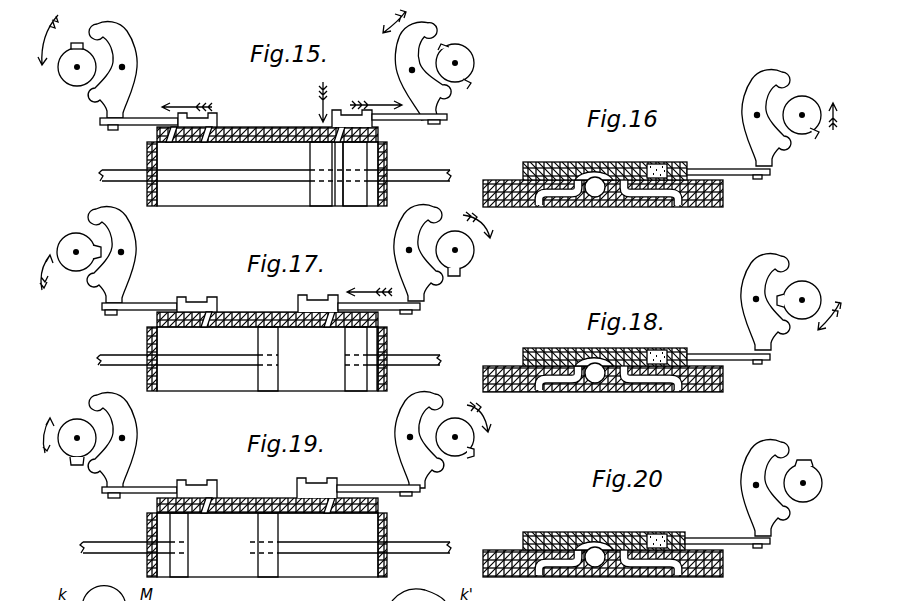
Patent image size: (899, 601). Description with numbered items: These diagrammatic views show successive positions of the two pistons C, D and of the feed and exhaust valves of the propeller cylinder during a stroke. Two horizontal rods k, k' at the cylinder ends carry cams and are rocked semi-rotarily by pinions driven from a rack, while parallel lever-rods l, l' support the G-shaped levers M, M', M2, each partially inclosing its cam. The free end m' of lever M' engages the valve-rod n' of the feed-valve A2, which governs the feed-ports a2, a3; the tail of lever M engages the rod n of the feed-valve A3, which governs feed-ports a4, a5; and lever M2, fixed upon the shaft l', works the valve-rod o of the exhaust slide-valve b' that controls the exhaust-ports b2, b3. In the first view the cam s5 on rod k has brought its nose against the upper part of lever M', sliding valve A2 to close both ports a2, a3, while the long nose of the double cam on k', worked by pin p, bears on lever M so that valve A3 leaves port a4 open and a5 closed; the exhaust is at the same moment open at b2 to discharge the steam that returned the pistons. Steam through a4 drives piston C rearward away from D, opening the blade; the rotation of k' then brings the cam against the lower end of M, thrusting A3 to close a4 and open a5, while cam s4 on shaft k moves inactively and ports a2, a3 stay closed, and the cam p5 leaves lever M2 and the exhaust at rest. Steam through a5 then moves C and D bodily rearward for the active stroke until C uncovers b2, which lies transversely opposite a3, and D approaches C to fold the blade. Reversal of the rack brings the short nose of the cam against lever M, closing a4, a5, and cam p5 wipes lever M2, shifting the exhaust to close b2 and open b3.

In FIG. 15, the horizontal rod k is at (65, 77).
In FIG. 17, the horizontal rod k is at (76, 238).
In FIG. 19, the horizontal rod k is at (77, 426).
In FIG. 15, the cam s5 is at (77, 70).
In FIG. 15, the G-shaped lever M' is at (120, 69).
In FIG. 17, the G-shaped lever M' is at (121, 255).
In FIG. 19, the G-shaped lever M' is at (121, 441).
In FIG. 15, the lever-rod l is at (136, 67).
In FIG. 17, the lever-rod l is at (129, 263).
In FIG. 19, the lever-rod l is at (131, 450).
In FIG. 15, the free end of lever M' m' is at (102, 139).
In FIG. 17, the free end of lever M' m' is at (109, 320).
In FIG. 15, the valve-rod n' is at (139, 112).
In FIG. 17, the valve-rod n' is at (139, 298).
In FIG. 19, the valve-rod n' is at (139, 481).
In FIG. 15, the feed-valve A2 is at (209, 115).
In FIG. 17, the feed-valve A2 is at (197, 291).
In FIG. 19, the feed-valve A2 is at (197, 479).
In FIG. 15, the feed-port a2 is at (167, 144).
In FIG. 19, the feed-port a2 is at (370, 520).
In FIG. 15, the feed-port a3 is at (204, 144).
In FIG. 17, the feed-port a3 is at (203, 329).
In FIG. 19, the feed-port a3 is at (206, 515).
In FIG. 15, the feed-valve A3 is at (335, 116).
In FIG. 17, the feed-valve A3 is at (318, 295).
In FIG. 19, the feed-valve A3 is at (317, 479).
In FIG. 15, the lever-rod l' is at (391, 79).
In FIG. 15, the horizontal rod k' is at (466, 63).
In FIG. 17, the horizontal rod k' is at (455, 231).
In FIG. 19, the horizontal rod k' is at (455, 419).
In FIG. 16, the horizontal rod k' is at (813, 100).
In FIG. 18, the horizontal rod k' is at (814, 298).
In FIG. 20, the horizontal rod k' is at (812, 476).
In FIG. 15, the cam p is at (469, 74).
In FIG. 17, the cam p is at (463, 262).
In FIG. 15, the valve-rod n is at (409, 125).
In FIG. 17, the valve-rod n is at (379, 308).
In FIG. 19, the valve-rod n is at (378, 483).
In FIG. 15, the piston C is at (321, 174).
In FIG. 17, the piston C is at (268, 359).
In FIG. 19, the piston C is at (179, 545).
In FIG. 15, the piston D is at (355, 174).
In FIG. 17, the piston D is at (356, 359).
In FIG. 19, the piston D is at (268, 545).
In FIG. 17, the cam s4 is at (62, 256).
In FIG. 17, the G-shaped lever M is at (402, 253).
In FIG. 19, the G-shaped lever M is at (410, 440).
In FIG. 17, the feed-port a4 is at (329, 330).
In FIG. 19, the feed-port a4 is at (334, 515).
In FIG. 17, the feed-port a5 is at (382, 320).
In FIG. 16, the G-shaped lever M2 is at (764, 94).
In FIG. 18, the G-shaped lever M2 is at (762, 277).
In FIG. 20, the G-shaped lever M2 is at (768, 449).
In FIG. 16, the slide valve b' is at (638, 156).
In FIG. 18, the slide valve b' is at (605, 365).
In FIG. 20, the slide valve b' is at (604, 549).
In FIG. 16, the valve-rod o is at (728, 164).
In FIG. 18, the valve-rod o is at (728, 349).
In FIG. 20, the valve-rod o is at (727, 533).
In FIG. 16, the exhaust-port b2 is at (550, 201).
In FIG. 18, the exhaust-port b2 is at (552, 386).
In FIG. 20, the exhaust-port b2 is at (550, 572).
In FIG. 16, the exhaust-port b3 is at (658, 201).
In FIG. 18, the exhaust-port b3 is at (658, 386).
In FIG. 20, the exhaust-port b3 is at (658, 572).
In FIG. 16, the cam p5 is at (809, 136).
In FIG. 18, the cam p5 is at (804, 298).
In FIG. 20, the cam p5 is at (800, 496).